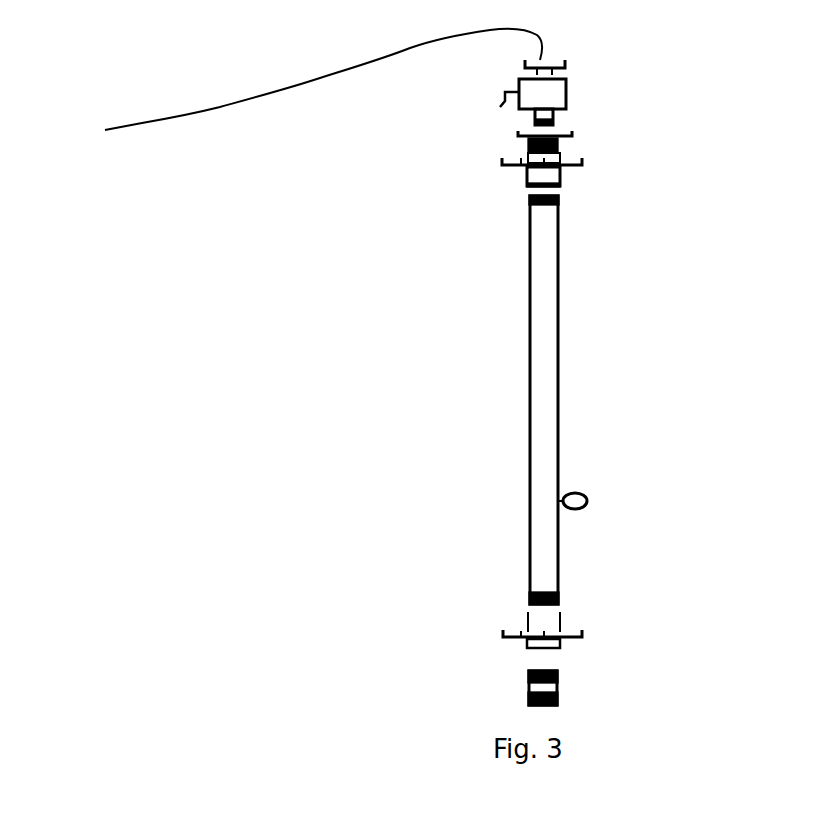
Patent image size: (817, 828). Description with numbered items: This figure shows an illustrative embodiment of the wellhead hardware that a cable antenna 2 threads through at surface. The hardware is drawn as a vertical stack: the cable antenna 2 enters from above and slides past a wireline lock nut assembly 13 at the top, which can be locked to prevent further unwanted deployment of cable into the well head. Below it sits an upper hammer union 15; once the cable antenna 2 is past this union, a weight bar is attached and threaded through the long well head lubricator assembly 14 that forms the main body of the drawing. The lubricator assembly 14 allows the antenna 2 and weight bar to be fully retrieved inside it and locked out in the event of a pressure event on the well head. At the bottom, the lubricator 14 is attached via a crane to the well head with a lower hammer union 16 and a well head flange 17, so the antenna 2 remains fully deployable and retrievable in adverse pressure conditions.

The cable antenna 2 is at (142, 123).
The wireline lock nut assembly 13 is at (570, 92).
The well head lubricator assembly 14 is at (560, 348).
The upper hammer union 15 is at (577, 176).
The lower hammer union 16 is at (577, 627).
The well head flange 17 is at (572, 687).